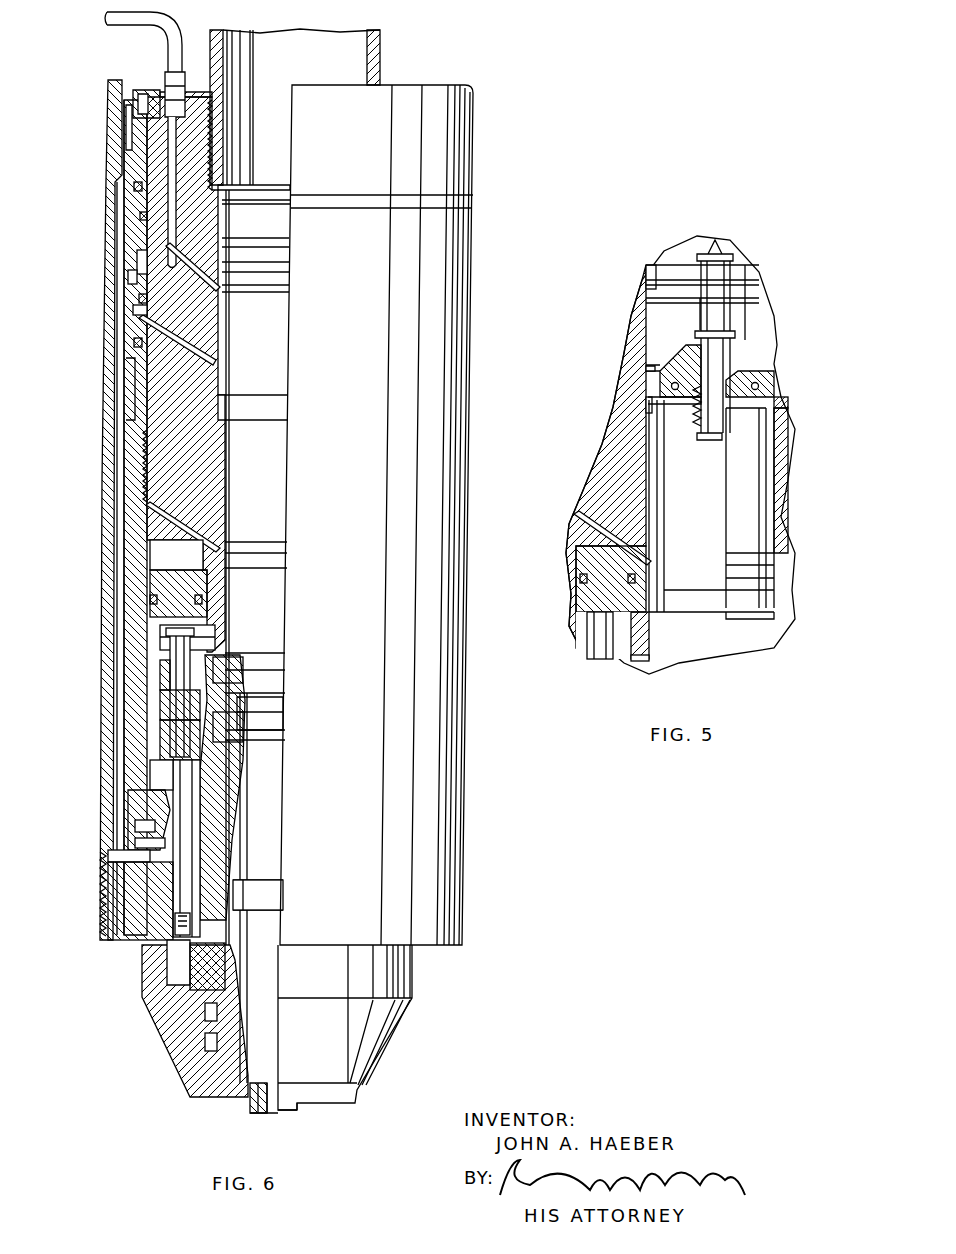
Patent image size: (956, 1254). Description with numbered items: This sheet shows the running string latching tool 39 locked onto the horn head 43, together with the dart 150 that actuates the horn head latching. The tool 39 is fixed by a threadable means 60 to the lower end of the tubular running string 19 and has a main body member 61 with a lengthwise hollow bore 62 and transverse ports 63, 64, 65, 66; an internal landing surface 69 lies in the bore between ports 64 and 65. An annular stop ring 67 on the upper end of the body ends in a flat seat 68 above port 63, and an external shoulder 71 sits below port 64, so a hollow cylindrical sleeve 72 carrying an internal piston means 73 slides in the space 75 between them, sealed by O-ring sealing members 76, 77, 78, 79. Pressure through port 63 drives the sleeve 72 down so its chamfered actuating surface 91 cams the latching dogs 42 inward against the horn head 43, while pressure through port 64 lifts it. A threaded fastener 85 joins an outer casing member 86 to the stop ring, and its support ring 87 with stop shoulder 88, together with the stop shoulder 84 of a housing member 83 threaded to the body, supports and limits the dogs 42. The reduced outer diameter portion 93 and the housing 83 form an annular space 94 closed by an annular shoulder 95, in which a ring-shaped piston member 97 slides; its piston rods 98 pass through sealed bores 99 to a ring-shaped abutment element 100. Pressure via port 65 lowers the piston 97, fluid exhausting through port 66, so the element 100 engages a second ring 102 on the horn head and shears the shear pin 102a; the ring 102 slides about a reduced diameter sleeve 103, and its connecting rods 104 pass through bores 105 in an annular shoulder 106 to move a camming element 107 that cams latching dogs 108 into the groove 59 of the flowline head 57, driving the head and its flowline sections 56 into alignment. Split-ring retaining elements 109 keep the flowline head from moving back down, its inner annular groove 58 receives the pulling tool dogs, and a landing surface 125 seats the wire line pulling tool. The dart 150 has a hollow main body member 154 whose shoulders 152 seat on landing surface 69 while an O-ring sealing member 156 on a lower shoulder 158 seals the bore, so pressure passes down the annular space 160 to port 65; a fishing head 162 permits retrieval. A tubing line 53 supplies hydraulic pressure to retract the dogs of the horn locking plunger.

In FIG. 6, the running string 19 is at (383, 48).
In FIG. 6, the running string latching tool 39 is at (484, 143).
In FIG. 6, the latching dogs 42 is at (140, 845).
In FIG. 6, the horn head 43 is at (150, 1000).
In FIG. 6, the tubing line 53 is at (160, 20).
In FIG. 6, the flowline sections 56 is at (300, 1108).
In FIG. 6, the flowline head 57 is at (250, 1095).
In FIG. 6, the annular groove 58 is at (250, 895).
In FIG. 6, the dog-receiving groove 59 is at (250, 975).
In FIG. 6, the threadable means 60 is at (217, 136).
In FIG. 6, the main body member 61 is at (193, 402).
In FIG. 5, the main body member 61 is at (630, 472).
In FIG. 6, the hollow bore 62 is at (275, 229).
In FIG. 5, the hollow bore 62 is at (689, 335).
In FIG. 6, the port 63 is at (196, 272).
In FIG. 5, the port 63 is at (648, 290).
In FIG. 6, the port 64 is at (195, 342).
In FIG. 5, the port 64 is at (646, 368).
In FIG. 6, the port 65 is at (190, 522).
In FIG. 5, the port 65 is at (602, 525).
In FIG. 6, the port 66 is at (210, 633).
In FIG. 5, the port 66 is at (645, 640).
In FIG. 6, the annular stop ring 67 is at (128, 127).
In FIG. 6, the flat seat 68 is at (138, 237).
In FIG. 6, the landing surface 69 is at (224, 412).
In FIG. 5, the landing surface 69 is at (648, 406).
In FIG. 6, the external shoulder 71 is at (135, 360).
In FIG. 6, the hollow cylindrical sleeve 72 is at (137, 258).
In FIG. 6, the internal piston means 73 is at (139, 298).
In FIG. 6, the space 75 is at (130, 276).
In FIG. 6, the O-ring sealing member 76 is at (134, 186).
In FIG. 6, the O-ring sealing member 77 is at (140, 216).
In FIG. 6, the O-ring sealing member 78 is at (140, 308).
In FIG. 6, the O-ring sealing member 79 is at (134, 342).
In FIG. 6, the housing member 83 is at (135, 593).
In FIG. 6, the stop shoulder 84 is at (140, 828).
In FIG. 6, the threaded fastener 85 is at (140, 90).
In FIG. 6, the outer casing member 86 is at (103, 428).
In FIG. 6, the support ring 87 is at (125, 880).
In FIG. 6, the stop shoulder 88 is at (135, 860).
In FIG. 6, the chamfered actuating surface 91 is at (140, 805).
In FIG. 6, the reduced outer diameter portion 93 is at (206, 603).
In FIG. 5, the reduced outer diameter portion 93 is at (641, 660).
In FIG. 6, the annular space 94 is at (160, 555).
In FIG. 6, the annular shoulder 95 is at (176, 652).
In FIG. 6, the ring-shaped piston member 97 is at (150, 590).
In FIG. 5, the ring-shaped piston member 97 is at (596, 568).
In FIG. 6, the piston rods 98 is at (160, 672).
In FIG. 5, the piston rods 98 is at (598, 634).
In FIG. 6, the sealed bores 99 is at (166, 632).
In FIG. 6, the ring-shaped abutment element 100 is at (165, 695).
In FIG. 6, the second ring 102 is at (165, 722).
In FIG. 6, the shear pin 102a is at (228, 676).
In FIG. 6, the sleeve 103 is at (237, 724).
In FIG. 6, the connecting rods 104 is at (150, 790).
In FIG. 6, the bores 105 is at (160, 768).
In FIG. 6, the annular shoulder 106 is at (205, 775).
In FIG. 6, the camming element 107 is at (182, 952).
In FIG. 6, the latching dogs 108 is at (192, 972).
In FIG. 6, the split-ring retaining elements 109 is at (205, 1042).
In FIG. 6, the landing surface 125 is at (262, 710).
In FIG. 5, the dart 150 is at (738, 619).
In FIG. 5, the shoulders 152 is at (778, 400).
In FIG. 5, the main body member 154 is at (763, 479).
In FIG. 5, the O-ring sealing member 156 is at (665, 612).
In FIG. 5, the shoulder 158 is at (776, 572).
In FIG. 5, the annular space 160 is at (664, 494).
In FIG. 5, the fishing head 162 is at (727, 270).